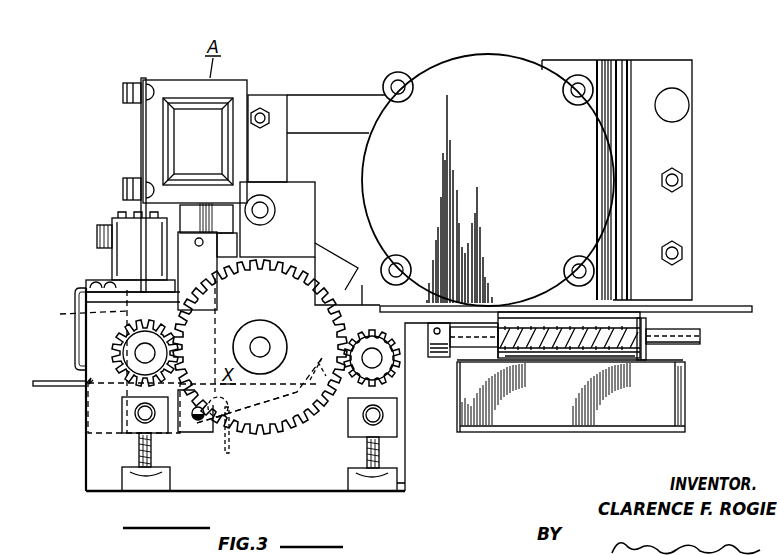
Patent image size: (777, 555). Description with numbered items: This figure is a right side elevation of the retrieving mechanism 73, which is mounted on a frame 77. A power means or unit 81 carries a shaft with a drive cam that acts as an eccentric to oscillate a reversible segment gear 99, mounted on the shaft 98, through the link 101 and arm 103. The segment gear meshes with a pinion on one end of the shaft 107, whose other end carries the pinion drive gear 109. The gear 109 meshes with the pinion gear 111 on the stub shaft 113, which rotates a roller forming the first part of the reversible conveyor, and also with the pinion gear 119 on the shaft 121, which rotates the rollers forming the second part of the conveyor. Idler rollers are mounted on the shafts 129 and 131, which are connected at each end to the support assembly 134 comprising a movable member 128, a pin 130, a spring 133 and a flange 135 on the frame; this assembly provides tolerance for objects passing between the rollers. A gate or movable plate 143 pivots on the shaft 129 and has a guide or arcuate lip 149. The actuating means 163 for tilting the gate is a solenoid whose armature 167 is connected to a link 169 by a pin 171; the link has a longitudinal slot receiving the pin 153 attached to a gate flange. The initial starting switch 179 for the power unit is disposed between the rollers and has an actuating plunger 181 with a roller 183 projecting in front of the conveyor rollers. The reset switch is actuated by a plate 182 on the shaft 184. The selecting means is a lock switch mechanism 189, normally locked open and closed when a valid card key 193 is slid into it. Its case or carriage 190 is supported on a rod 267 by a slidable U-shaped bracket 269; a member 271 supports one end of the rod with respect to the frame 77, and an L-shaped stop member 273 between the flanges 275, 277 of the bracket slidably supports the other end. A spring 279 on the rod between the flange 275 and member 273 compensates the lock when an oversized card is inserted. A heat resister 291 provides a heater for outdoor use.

The retrieving mechanism 73 is at (488, 158).
The frame 77 is at (740, 306).
The power means or unit 81 is at (424, 78).
The shaft 98 is at (275, 210).
The reversible segment gear 99 is at (336, 258).
The link 101 is at (326, 95).
The arm 103 is at (270, 107).
The shaft 107 is at (264, 342).
The pinion drive gear 109 is at (260, 337).
The pinion gear 111 is at (162, 353).
The stub shaft 113 is at (150, 354).
The pinion gear 119 is at (357, 338).
The shaft 121 is at (376, 344).
The movable member 128 is at (263, 425).
The shaft 129 is at (135, 414).
The pin 130 is at (139, 458).
The shaft 131 is at (364, 418).
The spring 133 is at (151, 456).
The support assembly 134 is at (122, 482).
The flange 135 is at (160, 485).
The gate or movable plate 143 is at (253, 407).
The guide or arcuate lip 149 is at (86, 386).
The pin 153 is at (199, 420).
The actuating means 163 is at (178, 82).
The armature 167 is at (212, 218).
The link 169 is at (218, 271).
The pin 171 is at (199, 247).
The initial starting switch 179 is at (112, 258).
The actuating plunger 181 is at (59, 329).
The plate 182 is at (229, 452).
The roller 183 is at (133, 408).
The shaft 184 is at (228, 410).
The lock switch mechanism 189 is at (522, 400).
The case or carriage 190 is at (591, 412).
The card key 193 is at (44, 378).
The rod 267 is at (703, 336).
The U-shaped bracket 269 is at (562, 356).
The member 271 is at (445, 352).
The L-shaped stop member 273 is at (648, 318).
The flange 275 is at (492, 352).
The flange 277 is at (647, 351).
The spring 279 is at (540, 328).
The heat resister 291 is at (689, 105).